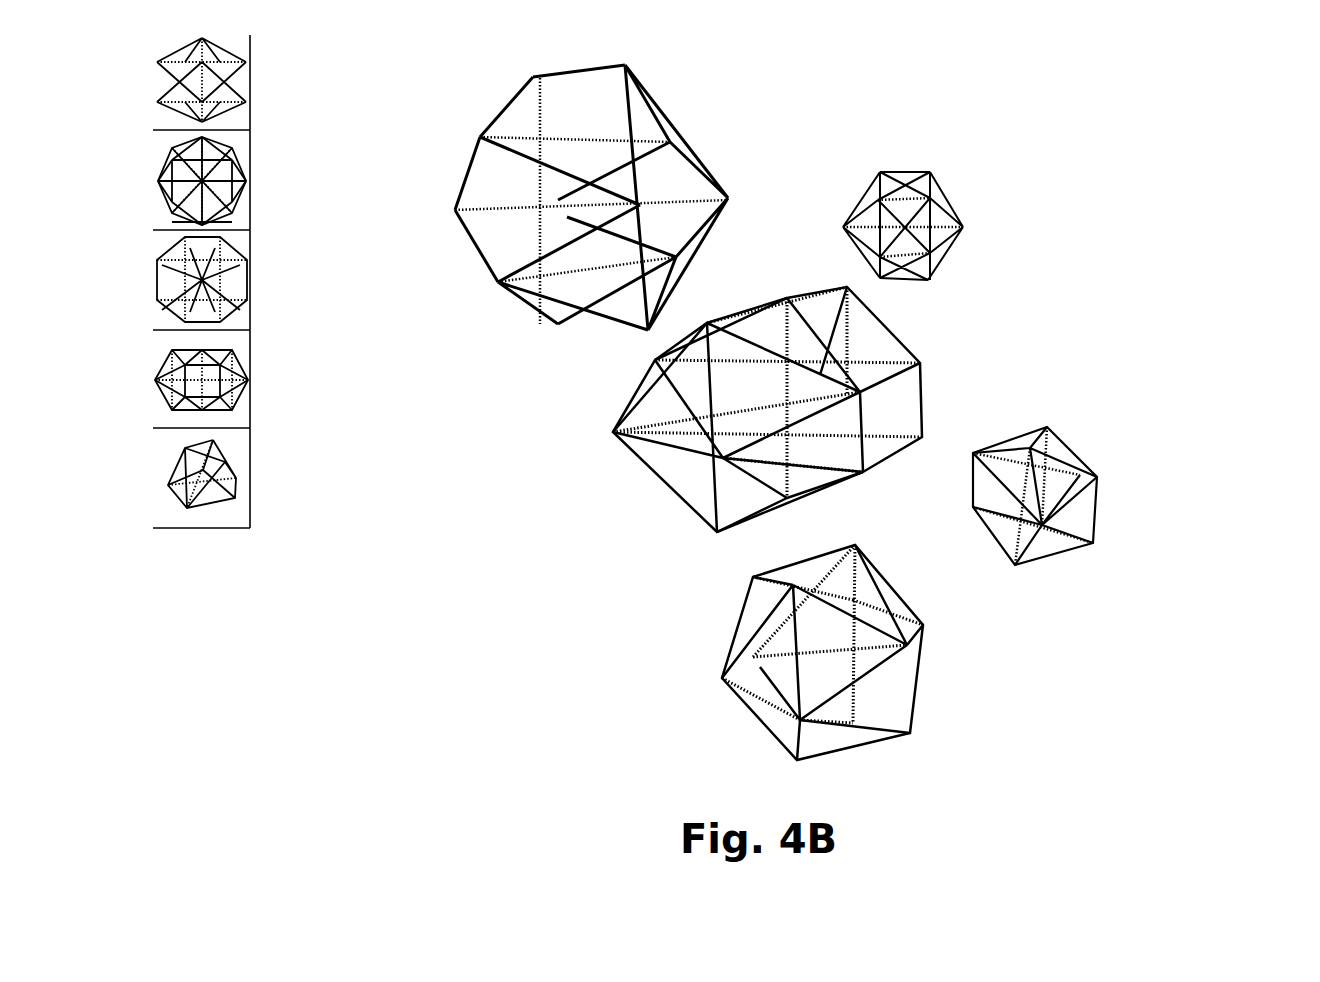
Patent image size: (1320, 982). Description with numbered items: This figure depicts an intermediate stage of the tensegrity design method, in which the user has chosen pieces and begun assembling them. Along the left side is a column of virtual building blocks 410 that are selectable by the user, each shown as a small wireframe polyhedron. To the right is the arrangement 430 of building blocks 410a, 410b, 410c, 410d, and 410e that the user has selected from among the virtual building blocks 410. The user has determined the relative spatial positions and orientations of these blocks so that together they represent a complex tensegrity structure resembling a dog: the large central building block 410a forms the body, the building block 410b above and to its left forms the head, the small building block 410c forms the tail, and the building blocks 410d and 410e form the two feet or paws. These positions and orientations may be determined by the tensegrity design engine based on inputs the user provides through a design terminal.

The arrangement 430 is at (1210, 67).
The virtual building blocks 410 is at (282, 572).
The building block 410a is at (650, 500).
The building block 410b is at (717, 122).
The building block 410c is at (920, 145).
The building block 410d is at (1072, 574).
The building block 410e is at (705, 697).